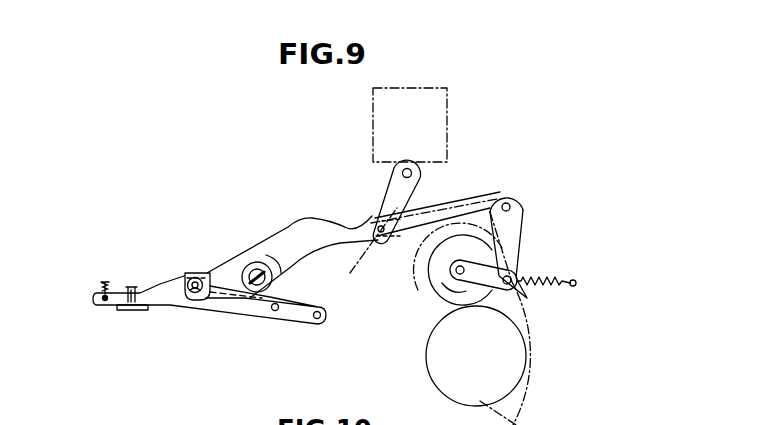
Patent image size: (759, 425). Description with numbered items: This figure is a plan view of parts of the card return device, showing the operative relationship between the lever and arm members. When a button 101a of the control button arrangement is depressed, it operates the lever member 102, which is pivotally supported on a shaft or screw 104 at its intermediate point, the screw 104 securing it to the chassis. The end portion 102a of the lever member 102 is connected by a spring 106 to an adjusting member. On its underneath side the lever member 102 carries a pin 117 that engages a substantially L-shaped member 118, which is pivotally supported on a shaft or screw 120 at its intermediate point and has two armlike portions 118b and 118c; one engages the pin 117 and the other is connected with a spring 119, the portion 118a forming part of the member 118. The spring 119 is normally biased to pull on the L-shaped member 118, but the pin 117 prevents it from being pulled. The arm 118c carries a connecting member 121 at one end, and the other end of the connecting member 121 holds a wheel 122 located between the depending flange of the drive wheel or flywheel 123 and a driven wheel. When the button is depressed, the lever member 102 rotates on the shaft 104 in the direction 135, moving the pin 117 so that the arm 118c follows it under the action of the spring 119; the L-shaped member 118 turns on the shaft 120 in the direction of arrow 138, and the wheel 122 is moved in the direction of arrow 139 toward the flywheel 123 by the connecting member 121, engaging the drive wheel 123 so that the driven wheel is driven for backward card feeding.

The button 101a is at (441, 107).
The lever member 102 is at (310, 219).
The end portion of the lever member 102a is at (111, 307).
The shaft or screw 104 is at (253, 264).
The spring 106 is at (100, 288).
The pin 117 is at (358, 252).
The L-shaped member 118 is at (509, 191).
The lever arm 118a is at (523, 198).
The armlike portion 118b is at (372, 218).
The arm of the L-shaped member 118c is at (513, 239).
The spring 119 is at (553, 279).
The shaft or screw 120 is at (511, 207).
The connecting member 121 is at (511, 282).
The wheel 122 is at (423, 281).
The drive wheel or flywheel 123 is at (536, 368).
The direction of rotation of the lever member 135 is at (279, 258).
The direction of pivoting of the L-shaped member 138 is at (485, 187).
The direction of movement of the wheel 139 is at (446, 288).